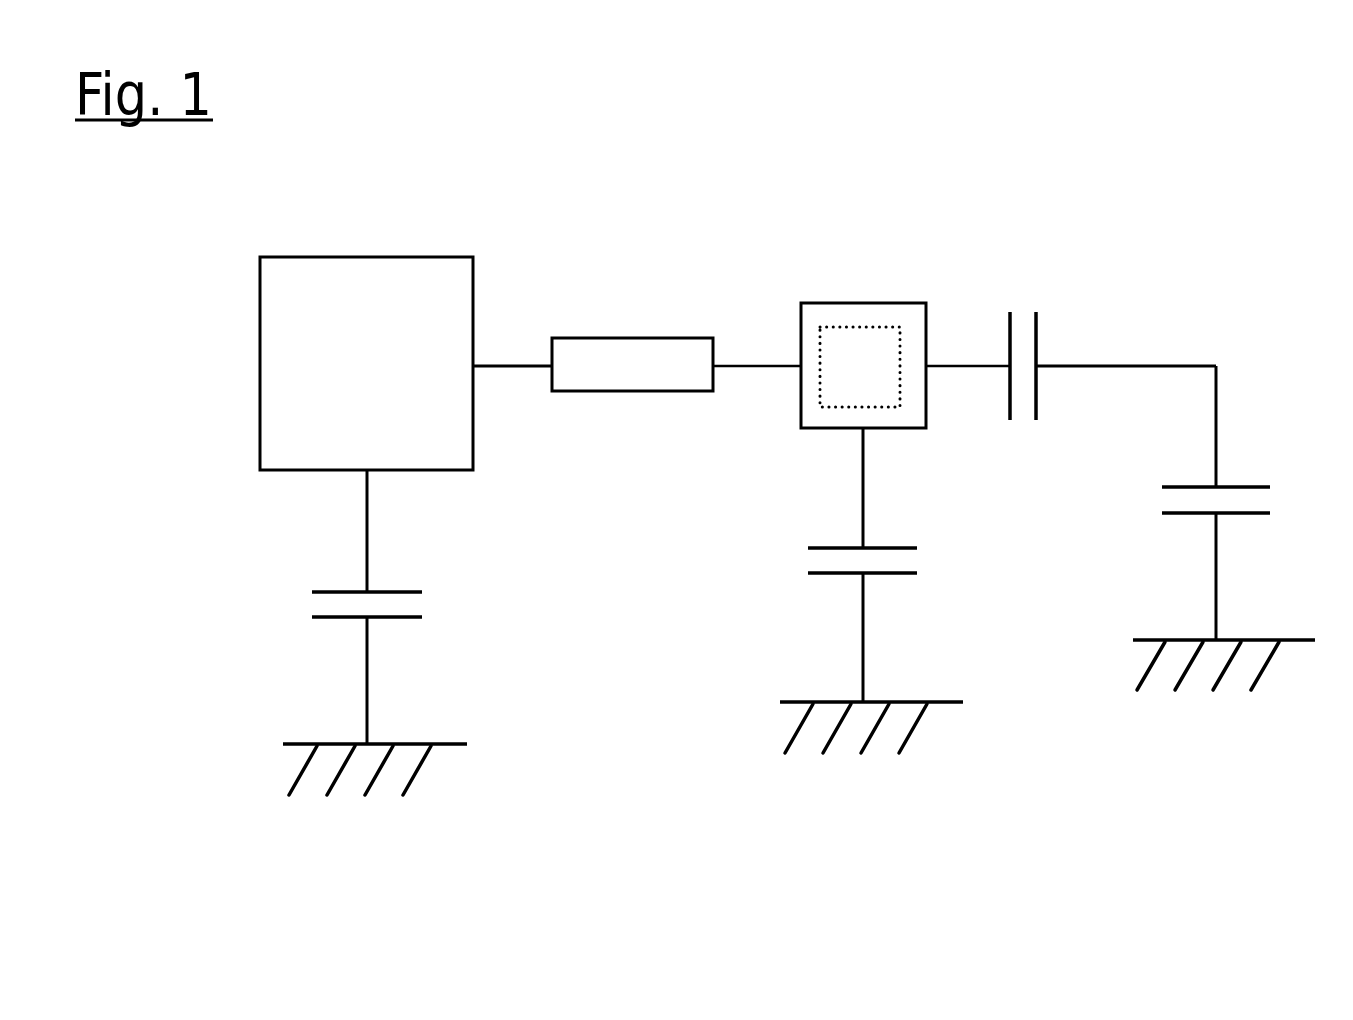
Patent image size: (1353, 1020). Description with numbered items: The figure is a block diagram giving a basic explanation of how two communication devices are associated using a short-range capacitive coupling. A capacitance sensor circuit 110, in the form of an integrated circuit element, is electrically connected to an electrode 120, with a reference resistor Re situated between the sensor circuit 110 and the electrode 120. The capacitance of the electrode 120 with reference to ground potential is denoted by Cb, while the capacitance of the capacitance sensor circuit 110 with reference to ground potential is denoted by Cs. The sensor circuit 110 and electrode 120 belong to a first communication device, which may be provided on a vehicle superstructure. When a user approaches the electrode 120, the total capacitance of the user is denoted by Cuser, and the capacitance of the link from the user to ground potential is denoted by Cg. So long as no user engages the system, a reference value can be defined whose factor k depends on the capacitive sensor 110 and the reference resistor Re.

The capacitance sensor circuit 110 is at (438, 428).
The electrode 120 is at (892, 383).
The reference resistor Re is at (632, 333).
The total capacitance of the user Cuser is at (1028, 394).
The capacitance of the link from the user to ground potential Cg is at (1246, 499).
The capacitance of the electrode with reference to ground potential Cb is at (893, 562).
The capacitance of the capacitance sensor with reference to ground potential Cs is at (396, 604).